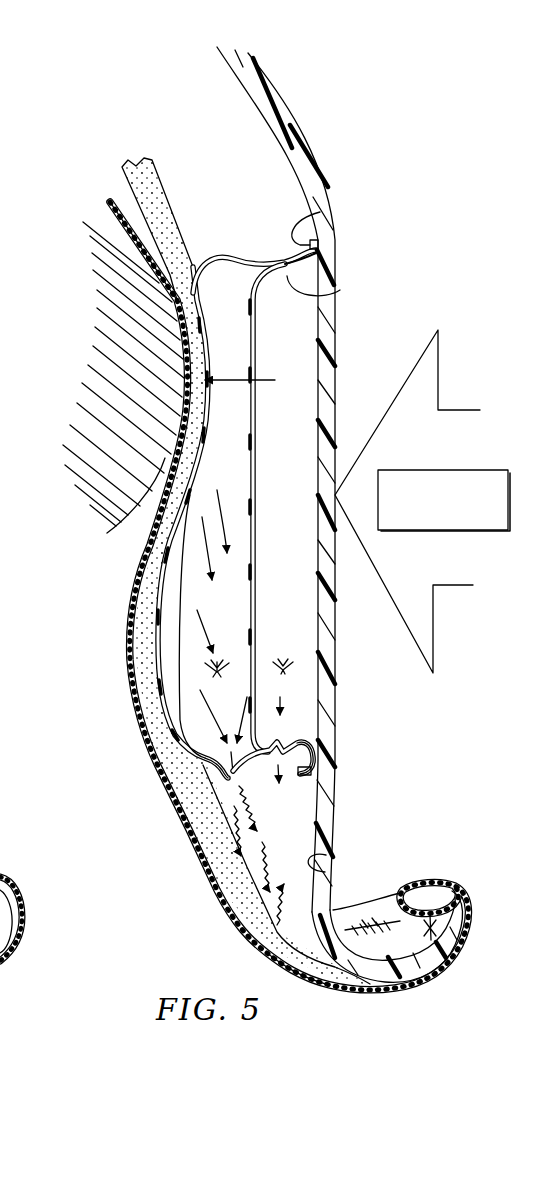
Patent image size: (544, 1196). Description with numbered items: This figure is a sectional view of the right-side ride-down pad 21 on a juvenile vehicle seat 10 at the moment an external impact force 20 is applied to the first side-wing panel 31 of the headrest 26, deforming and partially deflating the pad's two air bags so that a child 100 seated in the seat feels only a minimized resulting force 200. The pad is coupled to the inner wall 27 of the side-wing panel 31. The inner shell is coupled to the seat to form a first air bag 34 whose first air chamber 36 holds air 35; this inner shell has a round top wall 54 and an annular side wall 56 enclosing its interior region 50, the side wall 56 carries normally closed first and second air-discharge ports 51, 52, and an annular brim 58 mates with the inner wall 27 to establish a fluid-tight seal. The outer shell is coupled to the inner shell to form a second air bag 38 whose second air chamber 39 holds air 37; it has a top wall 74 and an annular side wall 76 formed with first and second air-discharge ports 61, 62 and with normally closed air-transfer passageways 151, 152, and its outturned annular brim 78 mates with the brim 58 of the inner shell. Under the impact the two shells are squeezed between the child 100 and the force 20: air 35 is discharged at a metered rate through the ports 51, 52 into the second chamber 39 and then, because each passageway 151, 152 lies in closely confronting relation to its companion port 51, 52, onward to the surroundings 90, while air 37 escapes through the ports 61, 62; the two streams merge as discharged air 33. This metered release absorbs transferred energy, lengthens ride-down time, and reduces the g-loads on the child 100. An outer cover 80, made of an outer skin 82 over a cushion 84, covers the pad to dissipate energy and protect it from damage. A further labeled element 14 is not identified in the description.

The juvenile vehicle seat 10 is at (300, 93).
The seat shell 14 is at (340, 159).
The external impact force 20 is at (425, 469).
The right-side ride-down pad 21 is at (246, 243).
The headrest 26 is at (324, 115).
The inner wall 27 is at (326, 862).
The first side-wing panel 31 is at (342, 850).
The discharged air 33 is at (252, 784).
The first air bag 34 is at (243, 439).
The air 35 is at (281, 432).
The first air chamber 36 is at (292, 568).
The air 37 is at (235, 475).
The second air bag 38 is at (150, 690).
The second air chamber 39 is at (193, 566).
The interior region 50 is at (304, 387).
The first air-discharge port 51 is at (290, 744).
The second air-discharge port 52 is at (284, 664).
The top wall 54 is at (258, 488).
The side wall 56 is at (337, 291).
The annular brim 58 is at (322, 250).
The first air-discharge port 61 is at (226, 773).
The second air-discharge port 62 is at (205, 658).
The top wall 74 is at (210, 348).
The side wall 76 is at (245, 270).
The outturned annular brim 78 is at (314, 223).
The outer cover 80 is at (342, 1001).
The outer skin 82 is at (113, 208).
The cushion 84 is at (137, 170).
The surroundings 90 is at (270, 947).
The child 100 is at (110, 268).
The first air-transfer passageway 151 is at (283, 757).
The second air-transfer passageway 152 is at (294, 688).
The resulting force 200 is at (230, 378).